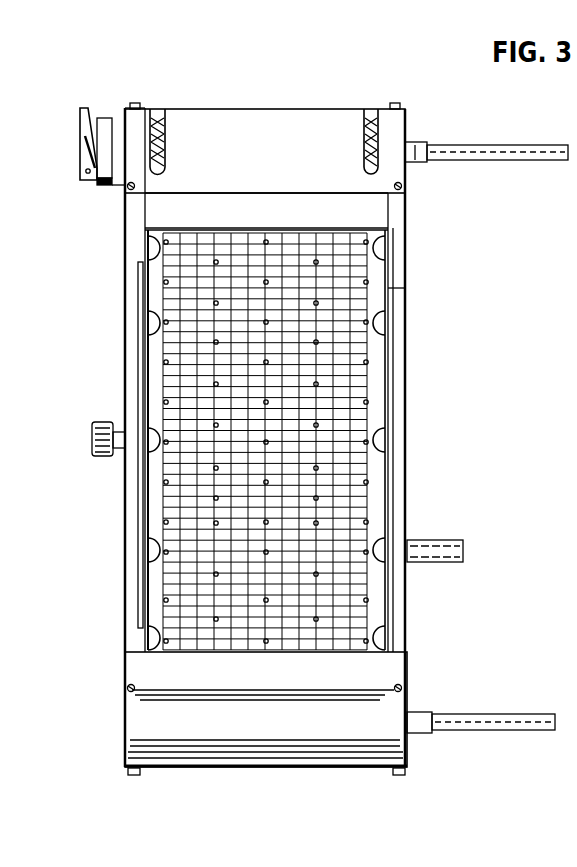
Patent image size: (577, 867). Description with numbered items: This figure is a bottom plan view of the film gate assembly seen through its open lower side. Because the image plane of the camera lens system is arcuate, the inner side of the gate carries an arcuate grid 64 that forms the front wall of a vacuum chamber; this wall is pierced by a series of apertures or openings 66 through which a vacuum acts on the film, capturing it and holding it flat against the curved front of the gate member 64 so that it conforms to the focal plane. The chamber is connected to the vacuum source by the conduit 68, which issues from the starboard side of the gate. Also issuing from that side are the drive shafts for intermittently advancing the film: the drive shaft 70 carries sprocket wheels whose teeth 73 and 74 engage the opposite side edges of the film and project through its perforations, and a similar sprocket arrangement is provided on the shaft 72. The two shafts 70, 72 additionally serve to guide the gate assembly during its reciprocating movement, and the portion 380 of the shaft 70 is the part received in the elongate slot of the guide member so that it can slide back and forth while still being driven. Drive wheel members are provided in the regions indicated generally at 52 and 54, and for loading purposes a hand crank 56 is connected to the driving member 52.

The drive wheel member region 52 is at (316, 104).
The drive wheel member region 54 is at (292, 768).
The hand crank 56 is at (84, 158).
The arcuate grid 64 is at (175, 352).
The apertures 66 is at (316, 357).
The conduit 68 is at (432, 550).
The drive shaft 70 is at (490, 155).
The shaft 72 is at (487, 712).
The sprocket wheel teeth 73 is at (375, 108).
The sprocket wheel teeth 74 is at (163, 120).
The shaft portion 380 is at (417, 162).